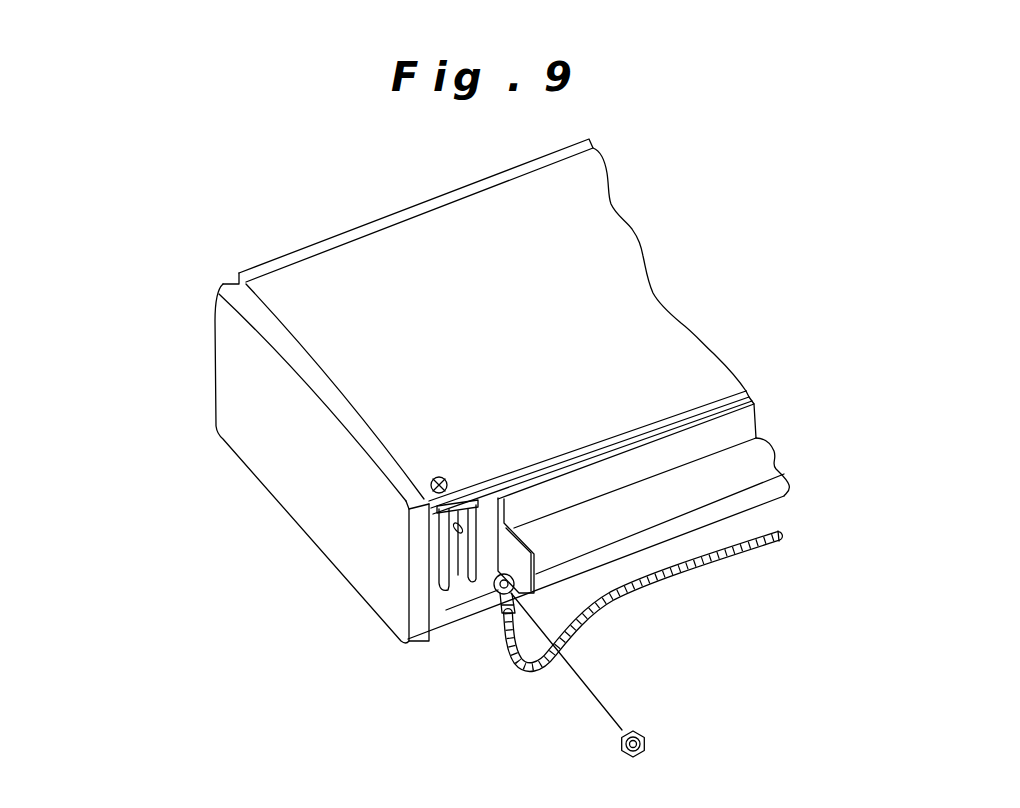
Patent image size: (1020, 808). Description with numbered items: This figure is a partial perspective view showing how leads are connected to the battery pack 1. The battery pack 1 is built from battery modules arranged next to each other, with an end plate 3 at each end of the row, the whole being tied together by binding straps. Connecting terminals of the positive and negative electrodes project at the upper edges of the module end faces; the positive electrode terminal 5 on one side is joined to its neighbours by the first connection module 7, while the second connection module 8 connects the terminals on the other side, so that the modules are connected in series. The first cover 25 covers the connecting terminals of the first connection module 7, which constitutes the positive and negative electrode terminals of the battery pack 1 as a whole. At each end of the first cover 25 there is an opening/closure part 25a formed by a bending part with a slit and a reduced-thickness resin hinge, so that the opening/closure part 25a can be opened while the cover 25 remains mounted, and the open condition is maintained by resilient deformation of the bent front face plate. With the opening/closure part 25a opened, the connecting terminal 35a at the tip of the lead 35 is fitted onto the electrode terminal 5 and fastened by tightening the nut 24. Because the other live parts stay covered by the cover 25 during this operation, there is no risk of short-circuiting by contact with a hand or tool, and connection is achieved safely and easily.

The battery pack 1 is at (371, 278).
The end plate 3 is at (283, 451).
The connecting terminal 5 is at (413, 536).
The first connection module 7 is at (400, 496).
The second connection module 8 is at (248, 263).
The nut 24 is at (613, 736).
The first cover 25 is at (683, 486).
The opening/closure part 25a is at (526, 536).
The lead 35 is at (501, 643).
The connecting terminal 35a is at (488, 590).